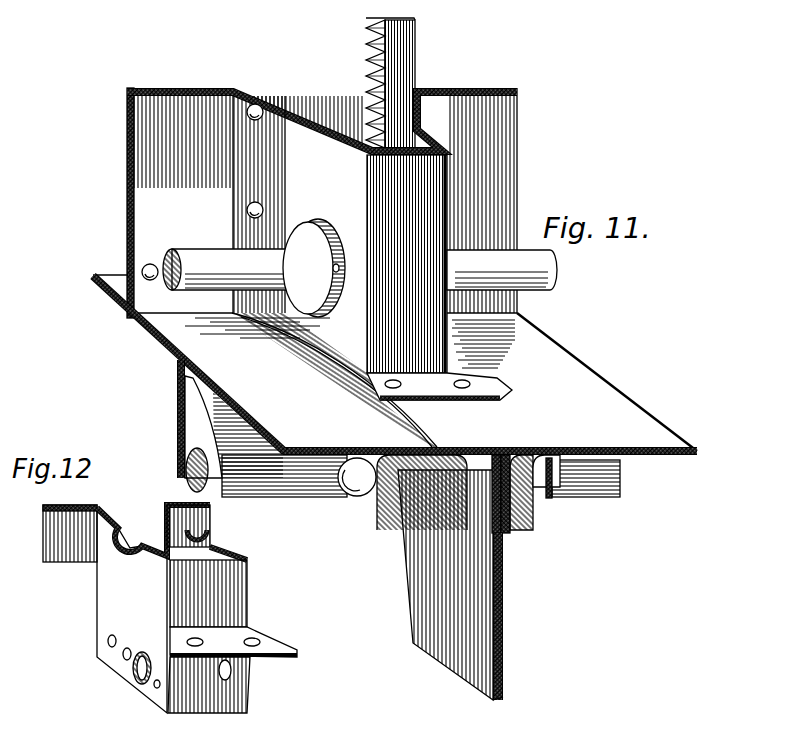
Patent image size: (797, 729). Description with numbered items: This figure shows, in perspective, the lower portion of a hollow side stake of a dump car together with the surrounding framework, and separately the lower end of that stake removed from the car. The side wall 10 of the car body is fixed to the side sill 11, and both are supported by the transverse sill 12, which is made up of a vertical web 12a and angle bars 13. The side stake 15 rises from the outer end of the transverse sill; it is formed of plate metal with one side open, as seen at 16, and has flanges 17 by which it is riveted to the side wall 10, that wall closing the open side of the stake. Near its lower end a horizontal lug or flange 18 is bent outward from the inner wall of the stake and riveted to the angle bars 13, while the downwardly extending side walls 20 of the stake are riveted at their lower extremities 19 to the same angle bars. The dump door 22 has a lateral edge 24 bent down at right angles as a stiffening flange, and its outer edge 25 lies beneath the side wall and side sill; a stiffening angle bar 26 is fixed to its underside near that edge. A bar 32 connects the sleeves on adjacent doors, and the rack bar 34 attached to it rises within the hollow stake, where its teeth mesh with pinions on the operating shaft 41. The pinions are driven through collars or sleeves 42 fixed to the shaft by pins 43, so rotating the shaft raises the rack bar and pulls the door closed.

In FIG. 11, the side wall 10 is at (170, 105).
In FIG. 11, the side sill 11 is at (97, 278).
In FIG. 11, the transverse sill 12 is at (505, 567).
In FIG. 11, the vertical web 12a is at (505, 639).
In FIG. 11, the angle bar 13 is at (590, 540).
In FIG. 11, the side stake 15 is at (407, 264).
In FIG. 11, the open side 16 is at (358, 100).
In FIG. 12, the open side 16 is at (135, 513).
In FIG. 11, the flange 17 is at (245, 95).
In FIG. 11, the lug or flange 18 is at (487, 390).
In FIG. 12, the lug or flange 18 is at (282, 643).
In FIG. 12, the lower extremity 19 is at (107, 636).
In FIG. 12, the side wall of side stake 20 is at (123, 582).
In FIG. 11, the dump door 22 is at (318, 490).
In FIG. 11, the lateral edge 24 is at (457, 500).
In FIG. 11, the outer edge 25 is at (116, 303).
In FIG. 11, the stiffening angle bar 26 is at (178, 404).
In FIG. 11, the bar 32 is at (347, 445).
In FIG. 11, the rack bar 34 is at (401, 47).
In FIG. 11, the operating shaft 41 is at (551, 263).
In FIG. 11, the collar or sleeve 42 is at (308, 237).
In FIG. 11, the pin 43 is at (337, 268).